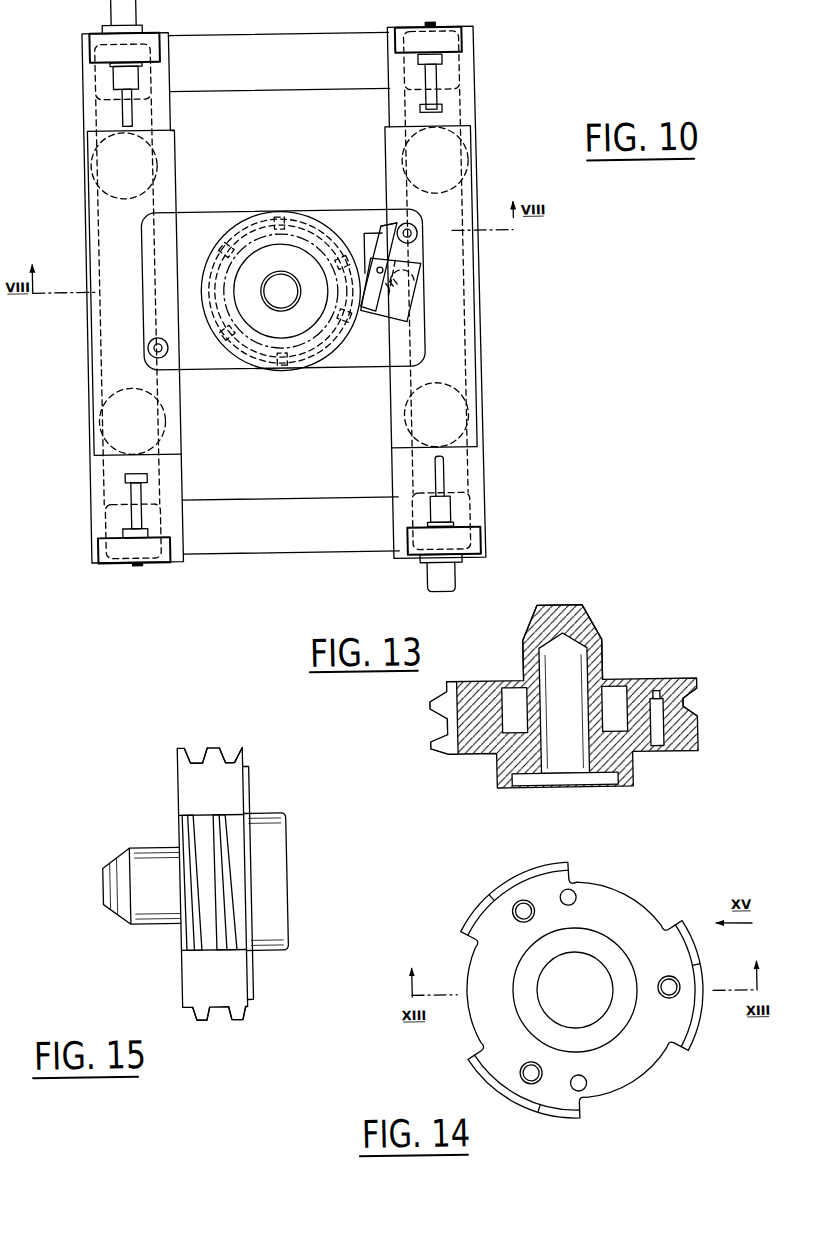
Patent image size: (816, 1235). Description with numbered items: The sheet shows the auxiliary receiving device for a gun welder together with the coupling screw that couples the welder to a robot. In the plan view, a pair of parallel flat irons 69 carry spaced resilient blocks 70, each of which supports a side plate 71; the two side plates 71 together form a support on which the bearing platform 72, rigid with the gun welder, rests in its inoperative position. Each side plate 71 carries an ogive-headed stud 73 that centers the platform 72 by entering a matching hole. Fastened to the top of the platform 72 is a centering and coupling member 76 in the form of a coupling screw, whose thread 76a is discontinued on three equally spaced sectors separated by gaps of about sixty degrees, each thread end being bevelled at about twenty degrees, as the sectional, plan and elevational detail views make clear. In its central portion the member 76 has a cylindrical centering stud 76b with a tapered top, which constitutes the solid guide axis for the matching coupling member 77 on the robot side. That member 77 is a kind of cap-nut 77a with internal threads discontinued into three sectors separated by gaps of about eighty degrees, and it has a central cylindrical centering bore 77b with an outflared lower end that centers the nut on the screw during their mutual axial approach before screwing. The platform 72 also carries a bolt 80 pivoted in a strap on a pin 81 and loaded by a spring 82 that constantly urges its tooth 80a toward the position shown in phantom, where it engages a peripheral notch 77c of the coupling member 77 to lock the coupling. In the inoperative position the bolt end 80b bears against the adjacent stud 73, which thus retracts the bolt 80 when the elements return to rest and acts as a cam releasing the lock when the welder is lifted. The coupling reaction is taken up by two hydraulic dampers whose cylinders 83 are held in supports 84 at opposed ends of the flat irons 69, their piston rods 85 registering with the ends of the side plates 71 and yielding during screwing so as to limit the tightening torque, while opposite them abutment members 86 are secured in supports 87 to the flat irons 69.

In FIG. 10, the flat irons 69 is at (167, 116).
In FIG. 10, the resilient blocks 70 is at (112, 198).
In FIG. 10, the side plate 71 is at (178, 176).
In FIG. 10, the bearing platform 72 is at (203, 376).
In FIG. 10, the stud 73 is at (146, 346).
In FIG. 13, the centering and coupling member 76 is at (481, 757).
In FIG. 15, the centering and coupling member 76 is at (174, 932).
In FIG. 10, the thread 76a is at (281, 357).
In FIG. 13, the thread 76a is at (430, 698).
In FIG. 15, the thread 76a is at (228, 748).
In FIG. 14, the thread 76a is at (526, 867).
In FIG. 13, the cylindrical centering stud 76b is at (589, 622).
In FIG. 15, the cylindrical centering stud 76b is at (120, 866).
In FIG. 10, the centering and coupling member 77 is at (314, 216).
In FIG. 10, the cap-nut 77a is at (241, 342).
In FIG. 10, the central cylindrical centering bore 77b is at (270, 279).
In FIG. 10, the peripheral notch 77c is at (330, 303).
In FIG. 10, the bolt 80 is at (379, 259).
In FIG. 10, the tooth 80a is at (372, 319).
In FIG. 10, the bolt end 80b is at (397, 217).
In FIG. 10, the pin 81 is at (366, 234).
In FIG. 10, the spring 82 is at (420, 272).
In FIG. 10, the cylinders 83 is at (118, 66).
In FIG. 10, the supports 84 is at (98, 35).
In FIG. 10, the piston rods 85 is at (128, 116).
In FIG. 10, the abutment members 86 is at (121, 475).
In FIG. 10, the supports 87 is at (98, 549).